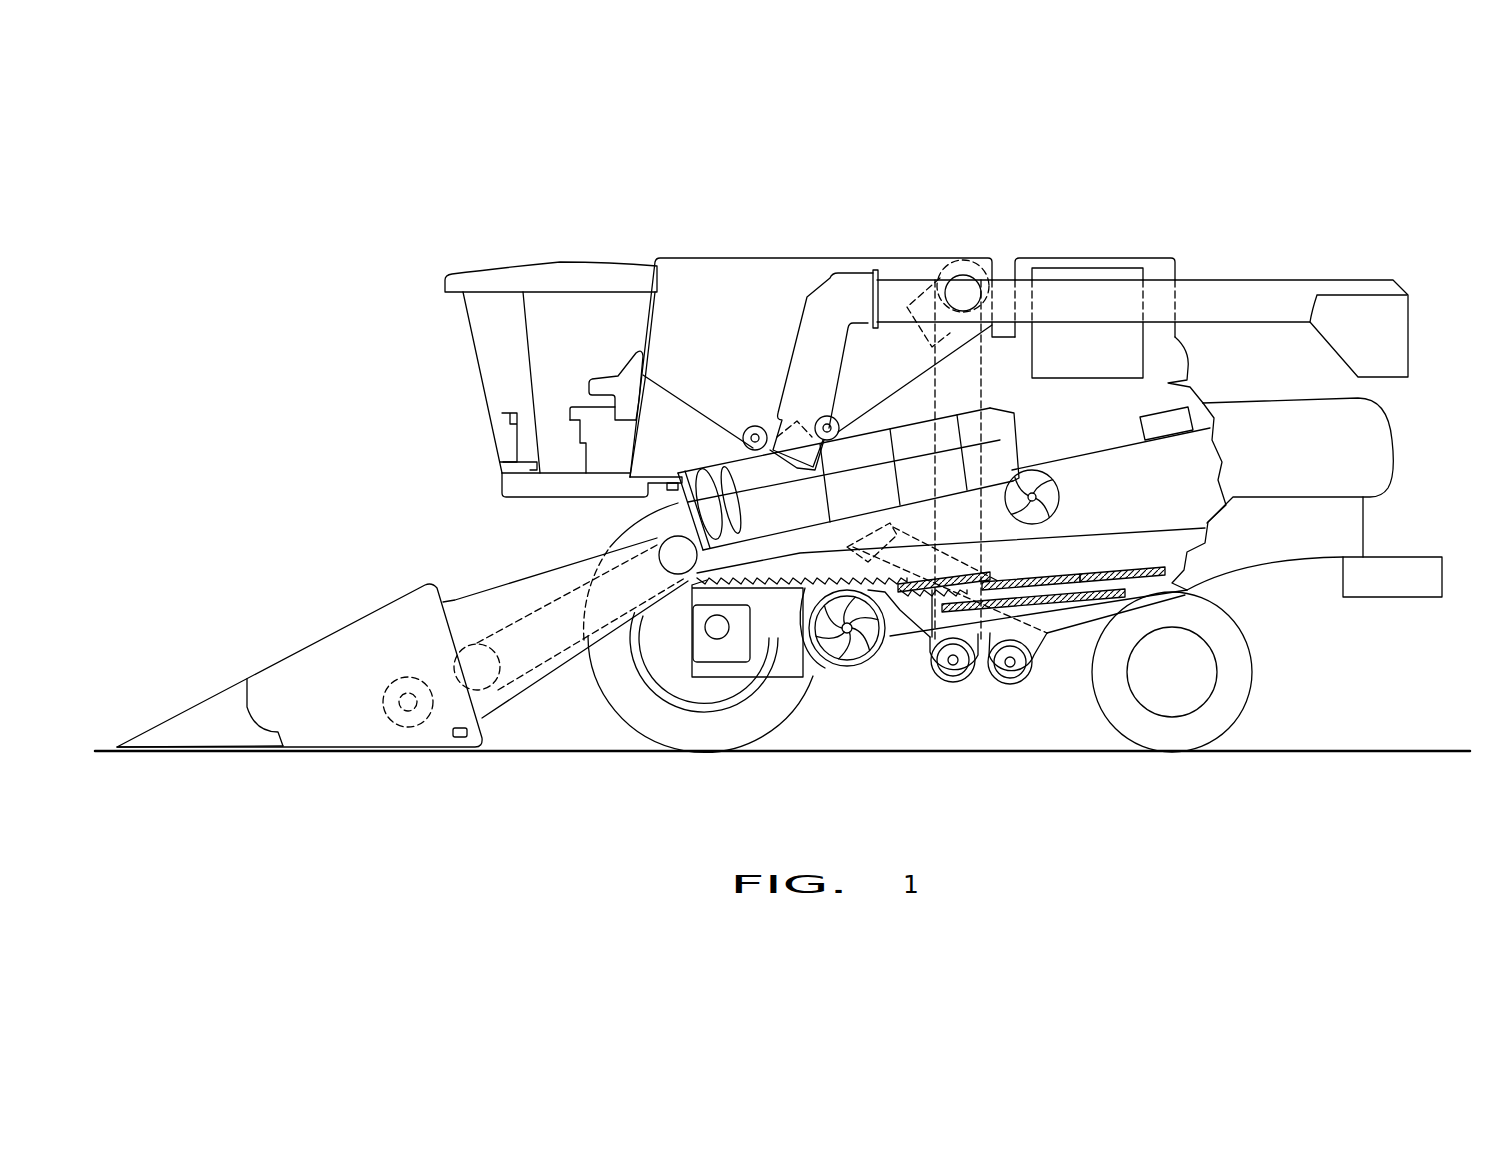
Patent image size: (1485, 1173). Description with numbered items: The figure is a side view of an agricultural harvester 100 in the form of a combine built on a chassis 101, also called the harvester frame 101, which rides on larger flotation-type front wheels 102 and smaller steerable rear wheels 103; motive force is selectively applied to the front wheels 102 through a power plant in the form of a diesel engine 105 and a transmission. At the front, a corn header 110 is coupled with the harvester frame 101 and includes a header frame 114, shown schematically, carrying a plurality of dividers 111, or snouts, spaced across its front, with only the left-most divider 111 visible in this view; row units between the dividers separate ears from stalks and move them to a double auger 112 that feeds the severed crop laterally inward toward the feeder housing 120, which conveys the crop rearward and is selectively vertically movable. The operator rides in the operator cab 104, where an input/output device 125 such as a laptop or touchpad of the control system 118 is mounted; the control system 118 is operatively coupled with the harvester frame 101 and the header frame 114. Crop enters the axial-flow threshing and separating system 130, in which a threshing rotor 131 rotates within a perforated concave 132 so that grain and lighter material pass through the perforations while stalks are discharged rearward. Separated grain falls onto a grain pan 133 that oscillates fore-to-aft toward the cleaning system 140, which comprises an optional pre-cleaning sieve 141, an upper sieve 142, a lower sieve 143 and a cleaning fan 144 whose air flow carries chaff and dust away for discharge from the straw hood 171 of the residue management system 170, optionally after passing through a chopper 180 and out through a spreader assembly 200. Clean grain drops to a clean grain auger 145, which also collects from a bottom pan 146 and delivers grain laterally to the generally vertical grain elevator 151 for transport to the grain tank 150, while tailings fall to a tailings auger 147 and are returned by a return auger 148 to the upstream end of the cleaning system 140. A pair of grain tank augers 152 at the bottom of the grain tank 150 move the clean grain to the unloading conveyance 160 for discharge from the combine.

The agricultural harvester 100 is at (540, 248).
The chassis 101 is at (1187, 592).
The front wheels 102 is at (623, 706).
The rear wheels 103 is at (1248, 690).
The operator cab 104 is at (478, 343).
The diesel engine 105 is at (1075, 272).
The header 110 is at (288, 632).
The divider 111 is at (142, 728).
The auger 112 is at (403, 676).
The header frame 114 is at (464, 740).
The control system 118 is at (518, 463).
The feeder housing 120 is at (518, 583).
The input/output device 125 is at (508, 413).
The threshing and separating system 130 is at (632, 522).
The threshing rotor 131 is at (707, 480).
The perforated concave 132 is at (877, 455).
The grain pan 133 is at (692, 590).
The cleaning system 140 is at (903, 688).
The pre-cleaning sieve 141 is at (993, 580).
The upper sieve 142 is at (1090, 572).
The lower sieve 143 is at (1060, 604).
The cleaning fan 144 is at (850, 668).
The clean grain auger 145 is at (960, 670).
The bottom pan 146 is at (1090, 617).
The tailings auger 147 is at (1005, 686).
The return auger 148 is at (920, 560).
The grain tank 150 is at (707, 265).
The grain elevator 151 is at (992, 384).
The grain tank augers 152 is at (755, 426).
The unloading conveyance 160 is at (1266, 287).
The residue management system 170 is at (1340, 614).
The straw hood 171 is at (1376, 440).
The chopper 180 is at (1141, 433).
The spreader assembly 200 is at (1418, 553).